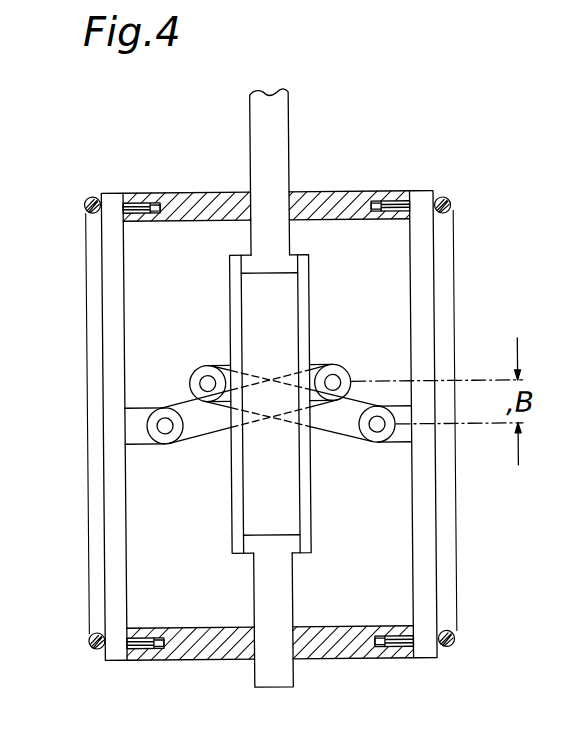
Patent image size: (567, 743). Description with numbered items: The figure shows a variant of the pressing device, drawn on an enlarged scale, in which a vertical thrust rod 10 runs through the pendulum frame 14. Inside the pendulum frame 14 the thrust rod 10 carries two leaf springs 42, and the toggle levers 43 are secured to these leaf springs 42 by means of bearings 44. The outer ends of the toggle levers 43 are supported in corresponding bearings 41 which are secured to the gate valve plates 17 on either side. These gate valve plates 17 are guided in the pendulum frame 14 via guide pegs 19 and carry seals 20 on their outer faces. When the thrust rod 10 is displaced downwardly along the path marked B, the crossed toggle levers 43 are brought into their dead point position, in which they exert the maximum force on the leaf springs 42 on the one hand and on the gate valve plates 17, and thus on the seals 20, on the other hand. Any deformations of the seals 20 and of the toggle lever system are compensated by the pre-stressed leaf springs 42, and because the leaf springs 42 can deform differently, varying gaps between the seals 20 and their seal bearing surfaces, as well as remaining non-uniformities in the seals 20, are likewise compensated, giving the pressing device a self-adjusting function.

The thrust rod 10 is at (262, 130).
The pendulum frame 14 is at (323, 200).
The gate valve plates 17 is at (112, 264).
The guide pegs 19 is at (139, 200).
The seals 20 is at (87, 221).
The bearings 41 is at (165, 425).
The leaf springs 42 is at (230, 314).
The toggle levers 43 is at (197, 432).
The bearings 44 is at (196, 375).